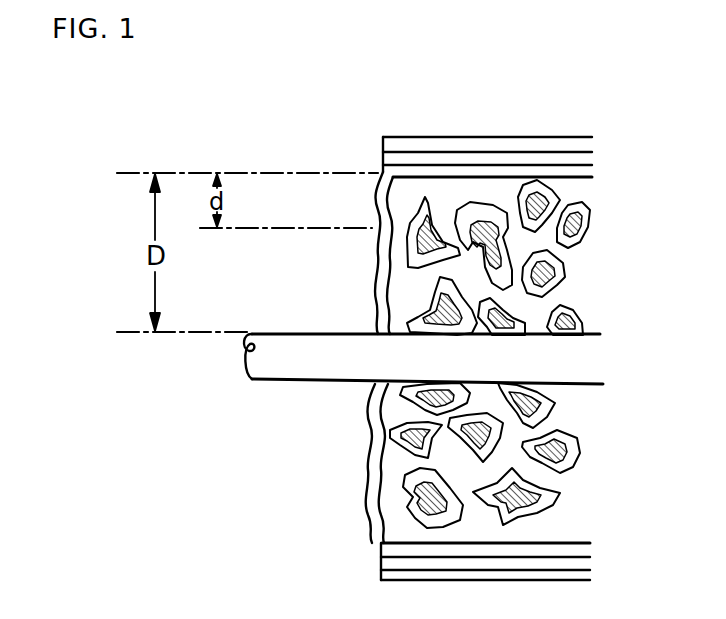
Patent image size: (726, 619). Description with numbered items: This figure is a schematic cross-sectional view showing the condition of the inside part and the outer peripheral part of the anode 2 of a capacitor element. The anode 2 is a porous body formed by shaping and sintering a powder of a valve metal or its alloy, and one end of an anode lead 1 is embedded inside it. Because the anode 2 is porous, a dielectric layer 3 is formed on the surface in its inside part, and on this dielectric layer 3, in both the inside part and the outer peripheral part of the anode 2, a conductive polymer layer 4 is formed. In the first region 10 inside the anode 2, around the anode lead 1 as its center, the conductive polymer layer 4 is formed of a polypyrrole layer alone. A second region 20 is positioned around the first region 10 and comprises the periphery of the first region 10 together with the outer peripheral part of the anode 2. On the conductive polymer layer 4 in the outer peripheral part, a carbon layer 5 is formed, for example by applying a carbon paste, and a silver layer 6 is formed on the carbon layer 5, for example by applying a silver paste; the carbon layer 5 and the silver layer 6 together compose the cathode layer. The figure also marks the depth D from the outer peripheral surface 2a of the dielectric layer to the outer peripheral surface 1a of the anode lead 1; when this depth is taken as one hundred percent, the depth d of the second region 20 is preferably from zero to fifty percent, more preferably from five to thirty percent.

The anode lead 1 is at (423, 357).
The outer peripheral surface of the anode lead 1a is at (310, 333).
The anode 2 is at (473, 501).
The outer peripheral surface of the dielectric layer 2a is at (403, 175).
The dielectric layer 3 is at (477, 493).
The conductive polymer layer 4 is at (450, 176).
The carbon layer 5 is at (485, 155).
The silver layer 6 is at (535, 147).
The first region 10 is at (603, 243).
The second region 20 is at (603, 165).